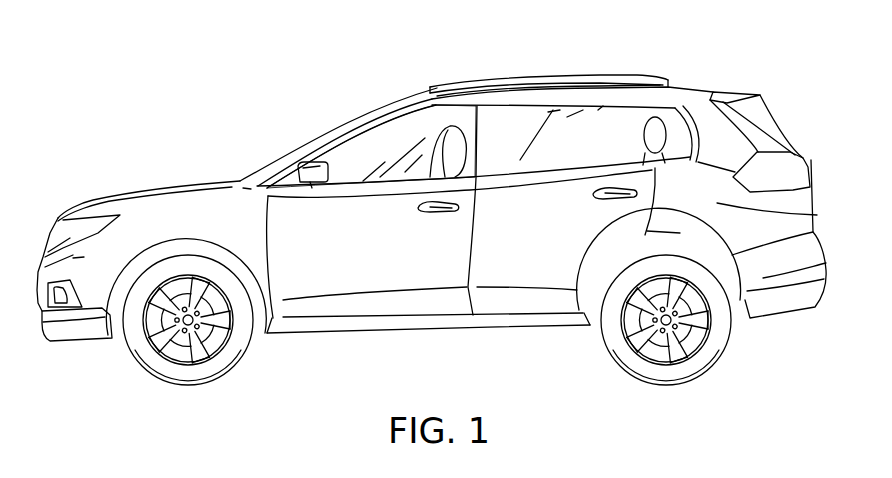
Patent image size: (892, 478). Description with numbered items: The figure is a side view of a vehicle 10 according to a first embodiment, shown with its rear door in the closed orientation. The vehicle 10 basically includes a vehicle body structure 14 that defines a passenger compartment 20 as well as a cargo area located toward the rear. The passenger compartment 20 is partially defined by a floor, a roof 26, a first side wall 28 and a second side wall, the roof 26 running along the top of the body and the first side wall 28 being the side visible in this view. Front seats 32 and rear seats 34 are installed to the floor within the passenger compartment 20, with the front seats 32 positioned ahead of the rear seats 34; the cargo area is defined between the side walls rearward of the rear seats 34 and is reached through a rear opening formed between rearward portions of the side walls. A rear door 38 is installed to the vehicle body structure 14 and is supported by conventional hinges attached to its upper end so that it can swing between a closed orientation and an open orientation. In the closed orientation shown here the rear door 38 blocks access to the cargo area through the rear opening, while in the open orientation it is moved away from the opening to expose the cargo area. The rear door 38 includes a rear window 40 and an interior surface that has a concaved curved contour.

The vehicle 10 is at (718, 52).
The vehicle body structure 14 is at (655, 85).
The passenger compartment 20 is at (423, 135).
The roof 26 is at (507, 100).
The first side wall 28 is at (817, 215).
The front seats 32 is at (453, 143).
The rear seats 34 is at (650, 135).
The rear door 38 is at (766, 113).
The rear window 40 is at (770, 142).